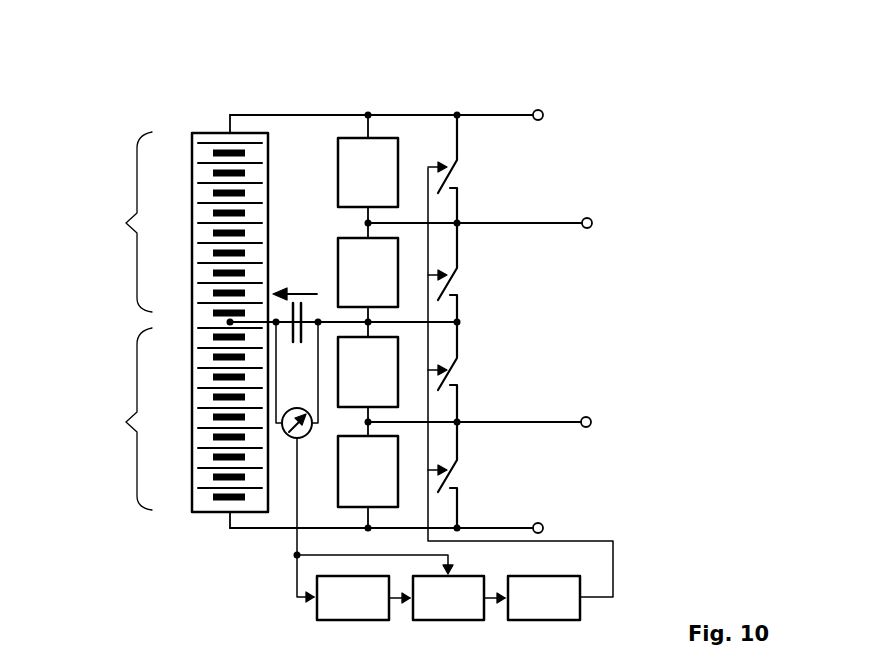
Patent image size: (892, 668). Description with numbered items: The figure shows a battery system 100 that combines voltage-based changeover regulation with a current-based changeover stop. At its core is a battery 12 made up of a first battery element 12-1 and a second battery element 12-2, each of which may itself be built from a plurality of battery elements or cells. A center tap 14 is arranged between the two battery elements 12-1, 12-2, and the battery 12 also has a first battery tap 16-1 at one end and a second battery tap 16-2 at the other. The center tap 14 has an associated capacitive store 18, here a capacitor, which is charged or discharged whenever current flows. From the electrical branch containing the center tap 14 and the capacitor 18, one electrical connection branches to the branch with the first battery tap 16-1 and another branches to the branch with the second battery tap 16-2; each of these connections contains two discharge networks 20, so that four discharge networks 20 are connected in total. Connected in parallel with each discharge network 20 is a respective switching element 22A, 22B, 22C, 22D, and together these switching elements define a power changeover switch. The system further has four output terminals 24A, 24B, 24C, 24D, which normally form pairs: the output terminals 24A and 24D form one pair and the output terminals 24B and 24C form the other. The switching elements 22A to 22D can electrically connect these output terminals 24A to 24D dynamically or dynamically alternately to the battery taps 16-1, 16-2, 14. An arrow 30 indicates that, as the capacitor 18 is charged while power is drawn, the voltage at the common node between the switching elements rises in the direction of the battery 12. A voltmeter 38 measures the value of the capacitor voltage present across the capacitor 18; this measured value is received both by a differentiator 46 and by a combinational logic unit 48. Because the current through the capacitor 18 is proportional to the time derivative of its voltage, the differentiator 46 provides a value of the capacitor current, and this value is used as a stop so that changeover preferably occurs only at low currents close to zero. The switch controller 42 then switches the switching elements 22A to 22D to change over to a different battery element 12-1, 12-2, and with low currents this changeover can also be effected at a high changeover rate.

The battery system 100 is at (186, 106).
The battery 12 is at (184, 130).
The first battery element 12-1 is at (115, 222).
The second battery element 12-2 is at (115, 419).
The center tap 14 is at (228, 322).
The first battery tap 16-1 is at (228, 130).
The second battery tap 16-2 is at (228, 514).
The capacitive store 18 is at (297, 345).
The discharge network 20 is at (383, 133).
The switching element 22A is at (458, 172).
The switching element 22B is at (458, 272).
The switching element 22C is at (458, 367).
The switching element 22D is at (458, 467).
The output terminal 24A is at (543, 117).
The output terminal 24B is at (591, 224).
The output terminal 24C is at (590, 423).
The output terminal 24D is at (543, 529).
The arrow 30 is at (302, 292).
The voltmeter 38 is at (305, 437).
The switch controller 42 is at (580, 614).
The differentiator 46 is at (317, 614).
The combinational logic unit 48 is at (413, 616).